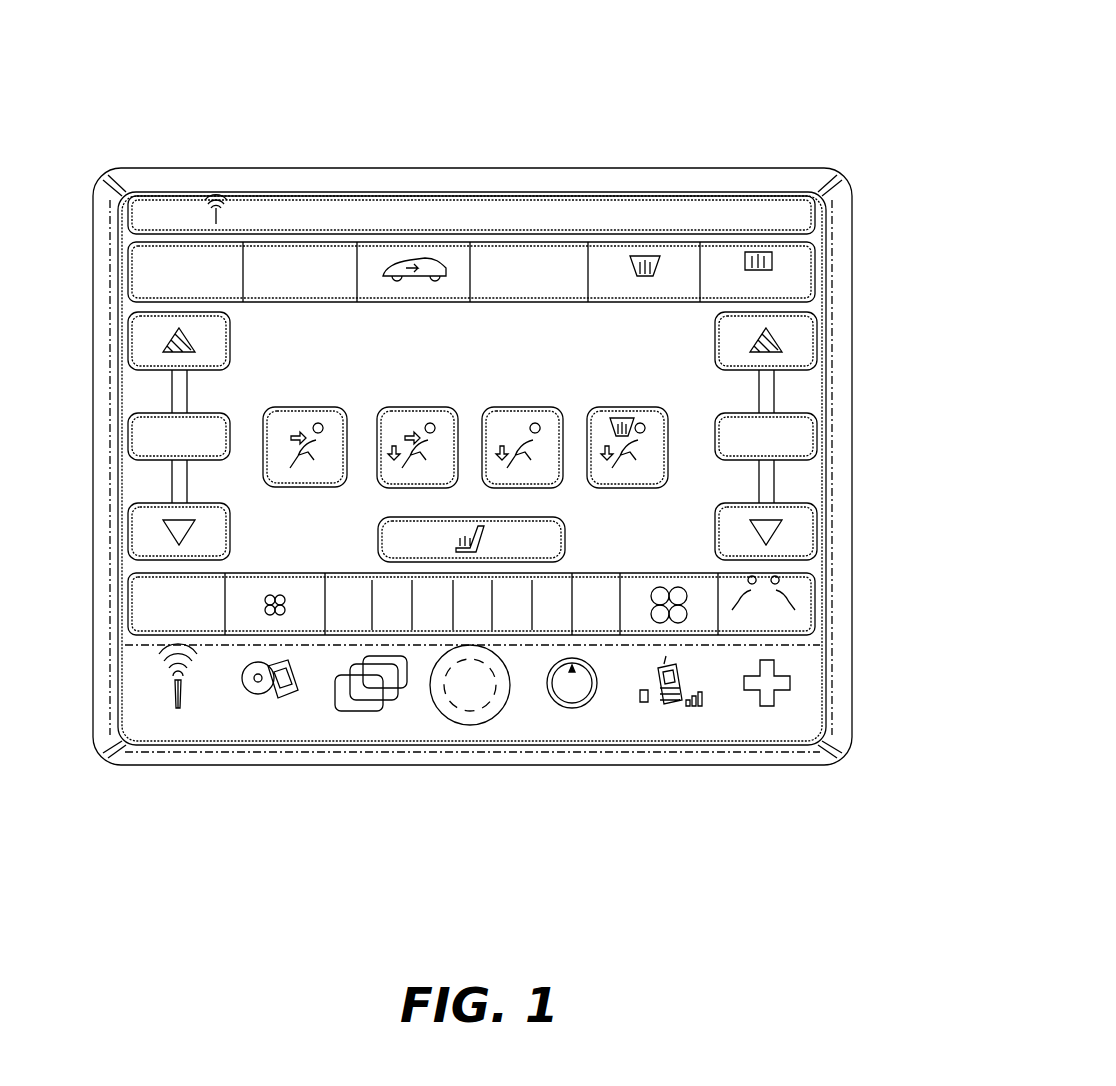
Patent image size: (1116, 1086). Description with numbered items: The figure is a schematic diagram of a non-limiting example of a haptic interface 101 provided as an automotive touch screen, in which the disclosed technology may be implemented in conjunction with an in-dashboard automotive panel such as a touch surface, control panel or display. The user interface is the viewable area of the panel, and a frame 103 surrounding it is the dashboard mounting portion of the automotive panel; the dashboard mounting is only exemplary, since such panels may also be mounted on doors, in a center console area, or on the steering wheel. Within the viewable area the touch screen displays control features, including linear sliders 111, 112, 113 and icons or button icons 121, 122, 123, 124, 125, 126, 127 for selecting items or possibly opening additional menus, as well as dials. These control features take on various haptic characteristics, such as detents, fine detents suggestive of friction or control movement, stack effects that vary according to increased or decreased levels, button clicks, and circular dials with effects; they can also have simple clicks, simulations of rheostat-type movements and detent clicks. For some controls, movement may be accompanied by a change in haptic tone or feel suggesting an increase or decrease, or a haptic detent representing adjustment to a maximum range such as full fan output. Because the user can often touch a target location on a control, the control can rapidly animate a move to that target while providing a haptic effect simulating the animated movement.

The haptic interface 101 is at (623, 58).
The frame 103 is at (246, 175).
The linear slider 111 is at (153, 413).
The linear slider 112 is at (787, 413).
The linear slider 113 is at (722, 591).
The button icon 121 is at (333, 250).
The button icon 122 is at (566, 250).
The button icon 123 is at (520, 404).
The button icon 124 is at (200, 700).
The button icon 125 is at (300, 700).
The button icon 126 is at (600, 700).
The button icon 127 is at (745, 700).